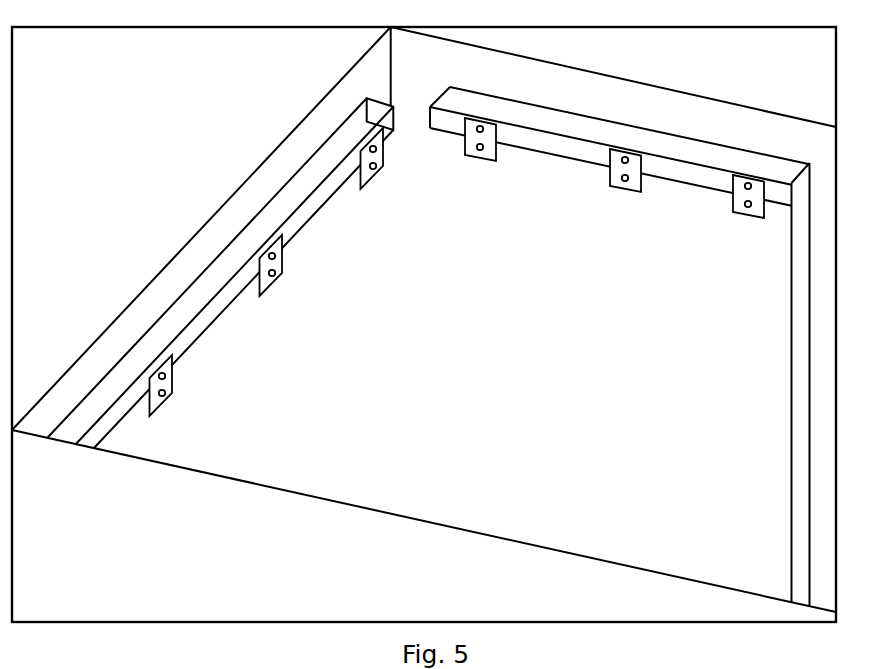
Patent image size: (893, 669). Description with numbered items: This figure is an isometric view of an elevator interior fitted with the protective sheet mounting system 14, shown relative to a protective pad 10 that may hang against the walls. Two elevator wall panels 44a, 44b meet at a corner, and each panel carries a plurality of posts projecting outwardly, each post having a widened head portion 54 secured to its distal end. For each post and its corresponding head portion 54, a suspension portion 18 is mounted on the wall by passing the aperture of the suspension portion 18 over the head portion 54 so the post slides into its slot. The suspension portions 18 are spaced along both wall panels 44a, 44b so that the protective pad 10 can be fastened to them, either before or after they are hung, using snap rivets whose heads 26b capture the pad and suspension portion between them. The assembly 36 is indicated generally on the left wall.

The protective pad 10 is at (596, 335).
The mounting system 14 is at (423, 253).
The suspension portion 18 is at (383, 155).
The head 26b is at (373, 168).
The ledger rail assembly 36 is at (236, 143).
The elevator wall panel 44a is at (802, 405).
The wall panel 44b is at (198, 330).
The head portion 54 is at (362, 147).